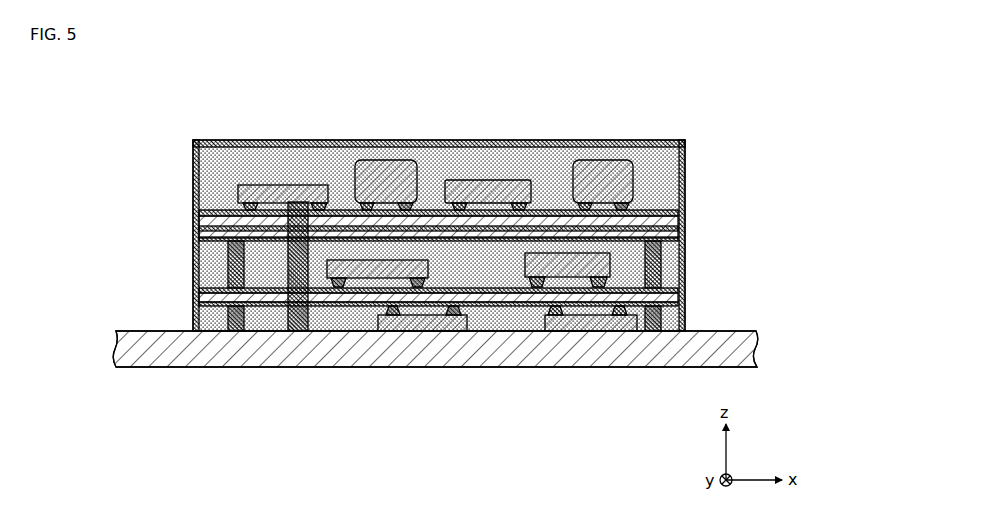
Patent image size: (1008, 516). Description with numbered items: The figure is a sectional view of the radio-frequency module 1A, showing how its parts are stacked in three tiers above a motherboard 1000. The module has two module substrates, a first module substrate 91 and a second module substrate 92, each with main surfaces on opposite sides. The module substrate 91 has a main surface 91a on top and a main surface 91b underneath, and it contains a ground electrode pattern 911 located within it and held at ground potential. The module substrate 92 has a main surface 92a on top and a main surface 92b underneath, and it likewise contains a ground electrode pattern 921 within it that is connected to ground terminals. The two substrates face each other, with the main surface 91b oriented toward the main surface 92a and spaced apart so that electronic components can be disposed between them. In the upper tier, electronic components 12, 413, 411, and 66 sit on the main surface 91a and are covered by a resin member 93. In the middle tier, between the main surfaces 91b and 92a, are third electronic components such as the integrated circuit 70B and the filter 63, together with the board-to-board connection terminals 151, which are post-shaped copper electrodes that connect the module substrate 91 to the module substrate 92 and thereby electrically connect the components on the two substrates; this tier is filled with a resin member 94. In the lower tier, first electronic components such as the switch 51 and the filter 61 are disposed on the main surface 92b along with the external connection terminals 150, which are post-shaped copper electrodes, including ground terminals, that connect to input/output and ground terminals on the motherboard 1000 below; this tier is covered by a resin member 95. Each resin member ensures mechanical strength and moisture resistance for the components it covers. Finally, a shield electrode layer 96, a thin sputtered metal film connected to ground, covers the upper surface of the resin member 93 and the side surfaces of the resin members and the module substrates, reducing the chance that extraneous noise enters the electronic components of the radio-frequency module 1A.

The radio-frequency module 1A is at (632, 96).
The motherboard 1000 is at (428, 370).
The electronic component 12 is at (275, 185).
The electronic component 413 is at (386, 160).
The electronic component 411 is at (603, 160).
The electronic component 66 is at (480, 180).
The filter 63 is at (526, 264).
The filter 61 is at (468, 326).
The switch 51 is at (543, 322).
The integrated circuit 70B is at (375, 263).
The module substrate 91 is at (416, 218).
The main surface 91a is at (215, 213).
The main surface 91b is at (213, 244).
The ground electrode pattern 911 is at (437, 238).
The module substrate 92 is at (399, 293).
The main surface 92a is at (215, 289).
The main surface 92b is at (215, 298).
The ground electrode pattern 921 is at (457, 297).
The resin member 93 is at (665, 180).
The resin member 94 is at (672, 250).
The resin member 95 is at (668, 309).
The shield electrode layer 96 is at (682, 141).
The external connection terminals 150 is at (288, 317).
The board-to-board connection terminals 151 is at (288, 261).